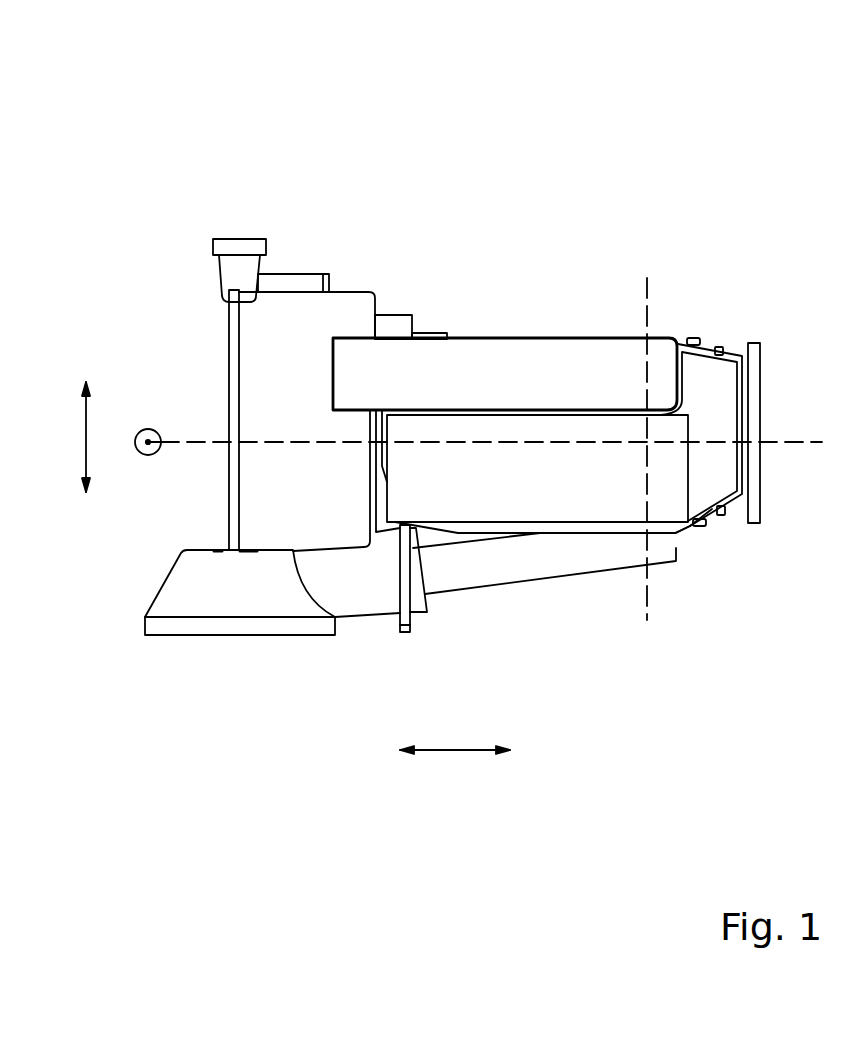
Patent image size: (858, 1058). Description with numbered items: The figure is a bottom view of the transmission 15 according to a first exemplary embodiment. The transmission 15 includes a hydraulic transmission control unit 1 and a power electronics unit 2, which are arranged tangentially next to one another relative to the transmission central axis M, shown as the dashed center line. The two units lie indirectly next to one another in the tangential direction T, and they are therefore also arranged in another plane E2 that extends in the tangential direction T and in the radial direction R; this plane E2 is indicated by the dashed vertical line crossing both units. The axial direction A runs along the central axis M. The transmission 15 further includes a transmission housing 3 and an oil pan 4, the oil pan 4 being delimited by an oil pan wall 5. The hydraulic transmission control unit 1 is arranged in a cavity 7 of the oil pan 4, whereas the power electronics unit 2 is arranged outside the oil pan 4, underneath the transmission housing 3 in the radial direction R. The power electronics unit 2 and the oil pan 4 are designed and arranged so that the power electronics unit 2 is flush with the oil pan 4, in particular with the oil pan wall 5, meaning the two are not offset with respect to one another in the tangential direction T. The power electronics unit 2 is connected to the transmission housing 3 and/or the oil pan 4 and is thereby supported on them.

The hydraulic transmission control unit 1 is at (628, 500).
The power electronics unit 2 is at (564, 362).
The transmission housing 3 is at (272, 488).
The oil pan 4 is at (698, 306).
The oil pan wall 5 is at (682, 526).
The cavity 7 is at (566, 525).
The transmission 15 is at (460, 240).
The radial direction R is at (148, 428).
The transmission central axis M is at (788, 442).
The other plane E2 is at (647, 305).
The tangential direction T is at (71, 437).
The axial direction A is at (455, 730).